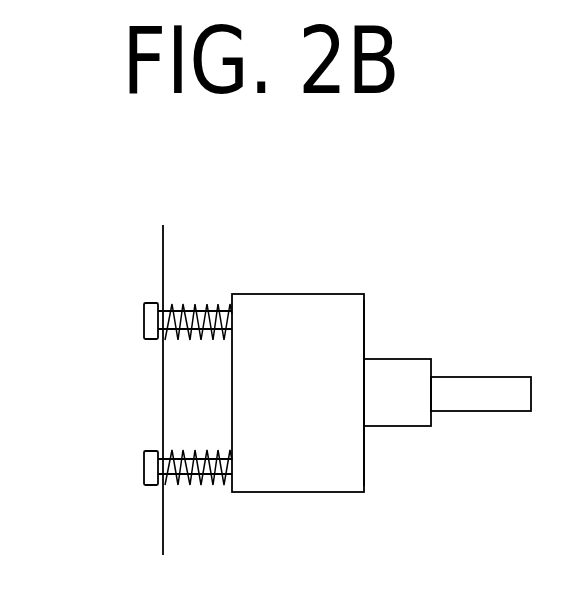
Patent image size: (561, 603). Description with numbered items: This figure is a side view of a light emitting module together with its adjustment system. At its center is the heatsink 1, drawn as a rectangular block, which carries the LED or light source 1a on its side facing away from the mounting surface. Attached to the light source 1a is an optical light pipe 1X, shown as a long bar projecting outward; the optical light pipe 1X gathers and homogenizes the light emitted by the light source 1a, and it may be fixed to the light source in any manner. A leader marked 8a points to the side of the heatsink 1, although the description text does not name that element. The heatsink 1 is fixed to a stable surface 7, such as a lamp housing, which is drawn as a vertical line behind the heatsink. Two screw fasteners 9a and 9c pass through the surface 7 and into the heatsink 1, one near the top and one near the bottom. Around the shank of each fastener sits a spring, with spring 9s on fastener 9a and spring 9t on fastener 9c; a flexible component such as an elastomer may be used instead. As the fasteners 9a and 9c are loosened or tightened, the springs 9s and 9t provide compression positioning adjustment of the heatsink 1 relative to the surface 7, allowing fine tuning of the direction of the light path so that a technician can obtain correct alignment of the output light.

The stable surface 7 is at (153, 250).
The heatsink 1 is at (354, 339).
The LED or light source 1a is at (422, 401).
The optical light pipe 1X is at (472, 367).
The housing side face 8a is at (408, 287).
The screw fastener 9a is at (143, 298).
The spring 9s is at (173, 347).
The screw fastener 9c is at (145, 450).
The spring 9t is at (204, 492).